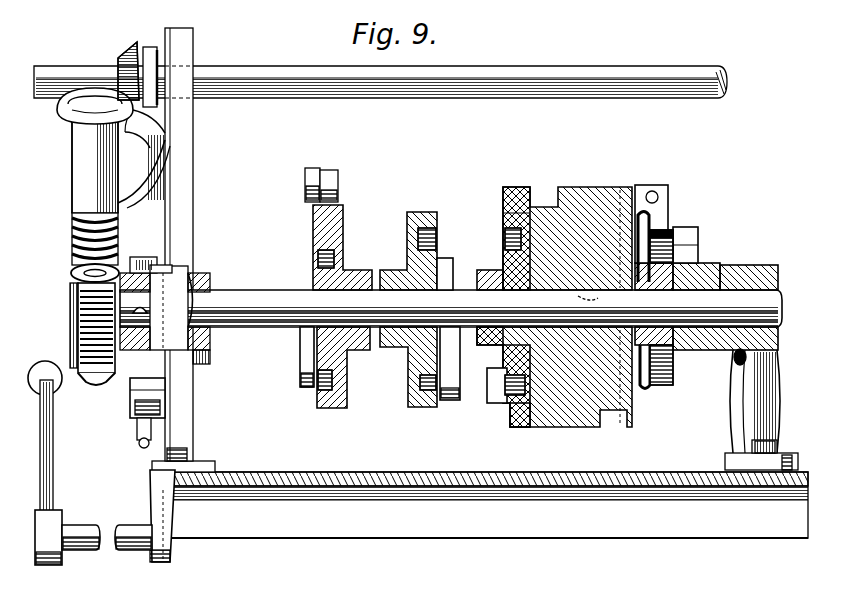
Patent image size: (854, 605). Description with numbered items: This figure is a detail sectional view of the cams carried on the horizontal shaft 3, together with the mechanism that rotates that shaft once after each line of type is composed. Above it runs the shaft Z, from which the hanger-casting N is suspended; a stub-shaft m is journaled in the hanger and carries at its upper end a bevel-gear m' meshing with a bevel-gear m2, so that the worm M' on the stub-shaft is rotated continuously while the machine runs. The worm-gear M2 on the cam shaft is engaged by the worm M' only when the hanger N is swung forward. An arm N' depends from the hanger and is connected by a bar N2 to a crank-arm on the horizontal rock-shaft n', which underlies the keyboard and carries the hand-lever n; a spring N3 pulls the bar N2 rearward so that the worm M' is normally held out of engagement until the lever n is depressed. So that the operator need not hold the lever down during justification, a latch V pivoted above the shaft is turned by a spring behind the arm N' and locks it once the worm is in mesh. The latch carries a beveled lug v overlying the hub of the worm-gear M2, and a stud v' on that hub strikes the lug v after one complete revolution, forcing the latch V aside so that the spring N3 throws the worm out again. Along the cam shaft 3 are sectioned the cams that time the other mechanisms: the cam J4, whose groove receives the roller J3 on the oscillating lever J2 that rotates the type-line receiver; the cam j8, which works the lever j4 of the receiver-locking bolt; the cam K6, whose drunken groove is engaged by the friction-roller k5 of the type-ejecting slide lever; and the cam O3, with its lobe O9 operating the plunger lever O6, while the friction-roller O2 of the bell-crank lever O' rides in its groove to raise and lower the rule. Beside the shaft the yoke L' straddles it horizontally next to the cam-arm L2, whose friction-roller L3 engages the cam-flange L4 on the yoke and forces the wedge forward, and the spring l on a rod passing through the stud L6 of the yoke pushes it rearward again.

The shaft Z is at (470, 70).
The hanger-casting N is at (124, 244).
The arm N' is at (170, 174).
The bar N2 is at (133, 400).
The spring N3 is at (140, 441).
The stub-shaft m is at (81, 273).
The bevel-gear m' is at (74, 109).
The bevel-gear m2 is at (143, 42).
The worm M' is at (71, 239).
The worm-gear M2 is at (80, 322).
The beveled lug v is at (151, 245).
The stud v' is at (138, 346).
The latch V is at (163, 264).
The shaft 3 is at (283, 296).
The friction-roller k5 is at (600, 298).
The hand-lever n is at (36, 463).
The rock-shaft n' is at (107, 558).
The bell-crank lever O' is at (297, 369).
The friction-roller O2 is at (333, 380).
The cam O3 is at (340, 412).
The lever O6 is at (312, 176).
The lobe O9 is at (343, 216).
The oscillating lever J2 is at (477, 279).
The roller J3 is at (443, 262).
The cam J4 is at (425, 216).
The oscillating lever j4 is at (492, 404).
The cam j8 is at (522, 427).
The cam K6 is at (612, 188).
The spring l is at (656, 194).
The yoke L' is at (672, 293).
The cam-arm L2 is at (698, 250).
The friction-roller L3 is at (673, 236).
The cam-flange L4 is at (662, 386).
The stud L6 is at (668, 191).